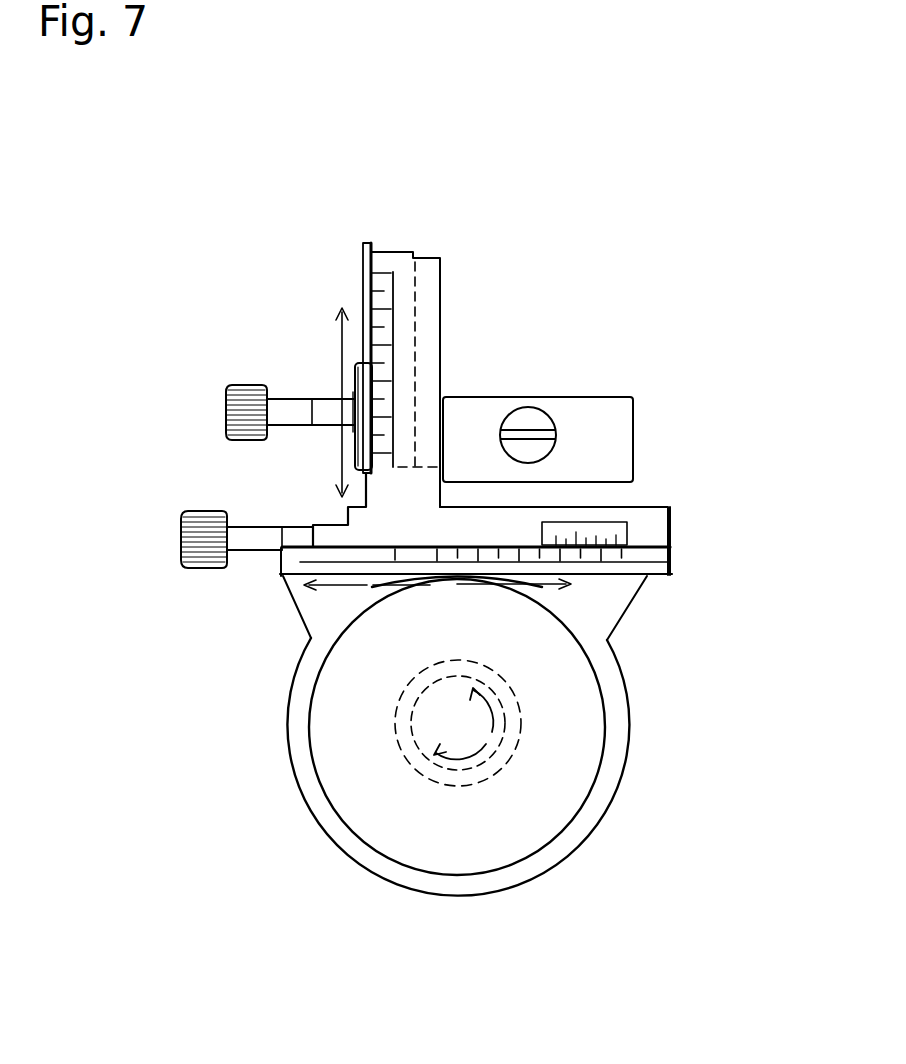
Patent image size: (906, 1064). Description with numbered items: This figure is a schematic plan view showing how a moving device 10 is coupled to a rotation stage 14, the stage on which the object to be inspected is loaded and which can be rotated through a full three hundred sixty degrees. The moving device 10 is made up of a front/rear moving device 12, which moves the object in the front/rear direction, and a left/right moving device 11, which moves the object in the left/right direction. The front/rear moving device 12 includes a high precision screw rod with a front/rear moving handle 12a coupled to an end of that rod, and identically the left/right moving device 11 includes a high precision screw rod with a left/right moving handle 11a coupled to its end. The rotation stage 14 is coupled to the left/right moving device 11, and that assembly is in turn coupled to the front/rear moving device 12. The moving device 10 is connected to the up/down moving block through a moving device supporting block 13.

The moving device 10 is at (450, 363).
The left/right moving device 11 is at (677, 543).
The left/right moving handle 11a is at (181, 548).
The front/rear moving device 12 is at (369, 241).
The front/rear moving handle 12a is at (222, 413).
The moving device supporting block 13 is at (607, 443).
The rotation stage 14 is at (563, 770).